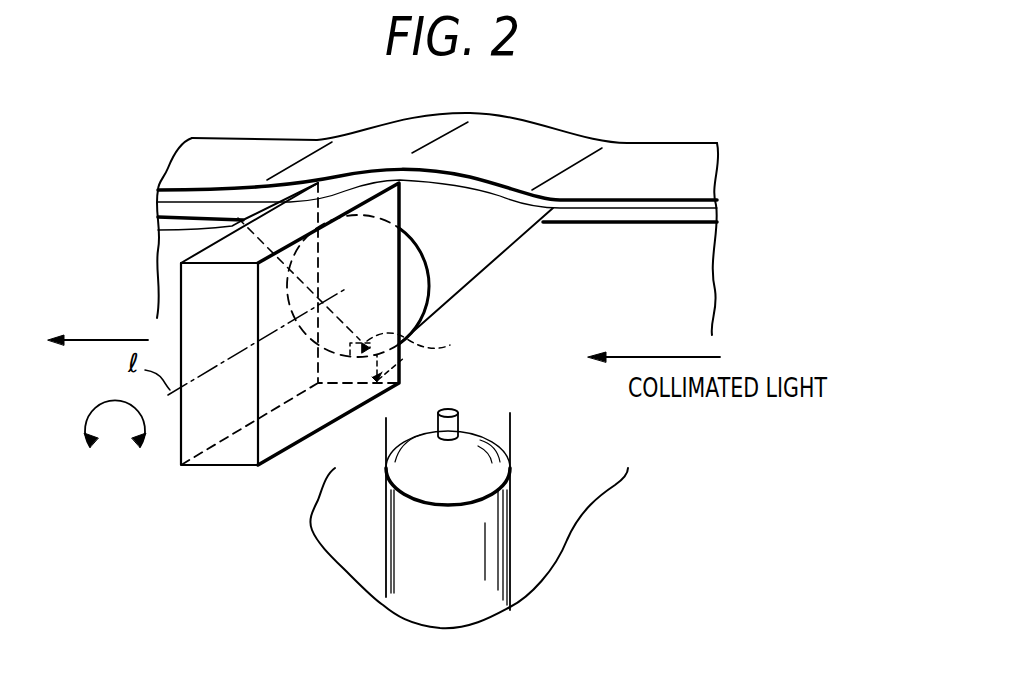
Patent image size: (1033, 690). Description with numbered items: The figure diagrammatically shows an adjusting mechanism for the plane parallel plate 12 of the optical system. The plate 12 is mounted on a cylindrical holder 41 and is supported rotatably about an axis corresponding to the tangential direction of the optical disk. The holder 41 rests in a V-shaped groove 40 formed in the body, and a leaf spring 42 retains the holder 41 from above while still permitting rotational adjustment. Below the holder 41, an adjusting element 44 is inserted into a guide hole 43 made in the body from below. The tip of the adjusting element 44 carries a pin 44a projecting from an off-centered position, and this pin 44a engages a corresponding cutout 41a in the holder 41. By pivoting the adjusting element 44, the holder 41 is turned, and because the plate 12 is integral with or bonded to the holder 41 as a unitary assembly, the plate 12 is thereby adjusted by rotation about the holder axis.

The plane parallel plate 12 is at (215, 453).
The V-shaped groove 40 is at (158, 232).
The cylindrical holder 41 is at (478, 252).
The cutout 41a is at (430, 346).
The leaf spring 42 is at (700, 152).
The guide hole 43 is at (510, 413).
The adjusting element 44 is at (490, 590).
The pin 44a is at (448, 408).